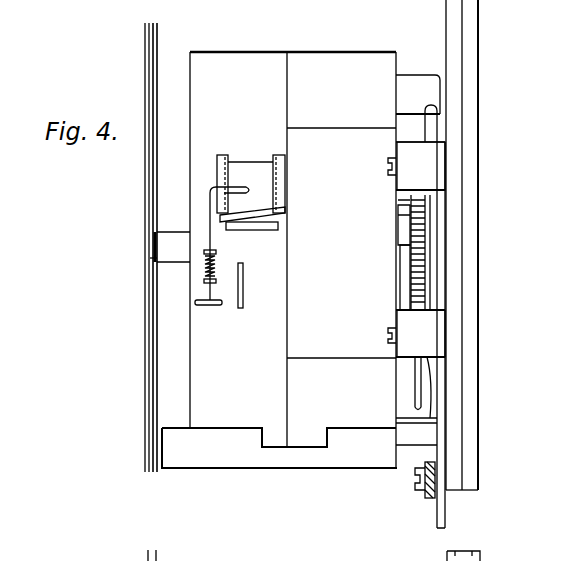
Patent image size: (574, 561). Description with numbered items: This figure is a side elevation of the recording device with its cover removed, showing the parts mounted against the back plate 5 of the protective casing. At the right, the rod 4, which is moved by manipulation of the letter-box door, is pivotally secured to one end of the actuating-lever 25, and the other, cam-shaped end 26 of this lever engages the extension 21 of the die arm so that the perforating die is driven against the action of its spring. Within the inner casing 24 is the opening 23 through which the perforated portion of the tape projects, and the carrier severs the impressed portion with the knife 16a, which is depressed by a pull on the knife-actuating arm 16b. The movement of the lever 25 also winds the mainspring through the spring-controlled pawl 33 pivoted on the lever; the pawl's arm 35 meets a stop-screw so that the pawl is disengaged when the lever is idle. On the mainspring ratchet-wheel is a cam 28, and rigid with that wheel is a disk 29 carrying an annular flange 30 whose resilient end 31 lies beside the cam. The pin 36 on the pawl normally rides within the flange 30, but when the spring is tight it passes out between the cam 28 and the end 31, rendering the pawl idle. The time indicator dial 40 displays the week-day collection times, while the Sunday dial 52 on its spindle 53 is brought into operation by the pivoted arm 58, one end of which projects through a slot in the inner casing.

The rod 4 is at (425, 496).
The back plate 5 is at (476, 219).
The knife 16a is at (259, 171).
The knife-actuating arm 16b is at (212, 248).
The extension 21 is at (428, 73).
The opening 23 is at (263, 237).
The inner casing 24 is at (280, 52).
The actuating-lever 25 is at (437, 425).
The cam-shaped end 26 is at (432, 124).
The cam 28 is at (405, 214).
The disk 29 is at (400, 233).
The annular flange 30 is at (405, 300).
The resilient flange end 31 is at (405, 258).
The spring-controlled pawl 33 is at (420, 313).
The pawl arm 35 is at (415, 391).
The pin 36 is at (400, 312).
The indicator dial 40 is at (160, 186).
The Sunday dial 52 is at (148, 198).
The spindle 53 is at (152, 260).
The pivoted arm 58 is at (243, 298).